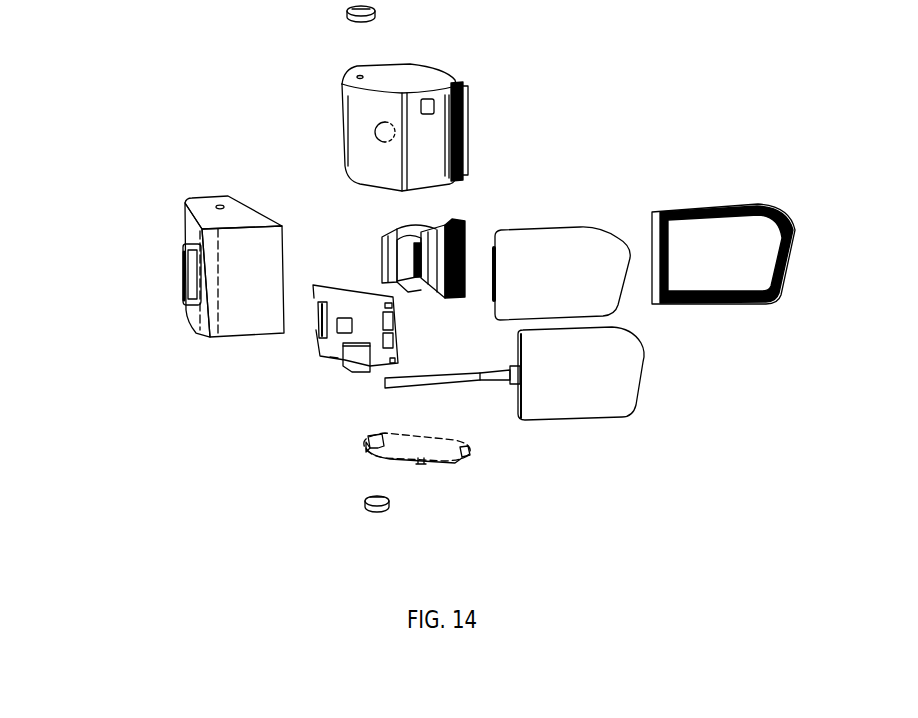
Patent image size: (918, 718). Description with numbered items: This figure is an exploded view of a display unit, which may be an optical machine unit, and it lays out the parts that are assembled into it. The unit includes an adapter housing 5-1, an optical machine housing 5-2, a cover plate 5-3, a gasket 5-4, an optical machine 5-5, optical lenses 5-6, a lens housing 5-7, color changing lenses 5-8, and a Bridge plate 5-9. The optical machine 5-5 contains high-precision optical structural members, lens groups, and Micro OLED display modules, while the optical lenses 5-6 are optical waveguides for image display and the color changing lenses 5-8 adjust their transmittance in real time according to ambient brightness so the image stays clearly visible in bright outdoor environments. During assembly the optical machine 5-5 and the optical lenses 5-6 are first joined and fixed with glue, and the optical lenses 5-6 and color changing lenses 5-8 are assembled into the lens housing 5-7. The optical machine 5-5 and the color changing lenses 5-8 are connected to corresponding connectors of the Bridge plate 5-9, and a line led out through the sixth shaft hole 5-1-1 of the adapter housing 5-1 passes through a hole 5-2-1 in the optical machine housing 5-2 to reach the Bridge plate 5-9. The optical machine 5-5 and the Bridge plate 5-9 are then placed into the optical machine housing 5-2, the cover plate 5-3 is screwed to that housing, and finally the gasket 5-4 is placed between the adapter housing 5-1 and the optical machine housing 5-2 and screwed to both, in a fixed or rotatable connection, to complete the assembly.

The adapter housing 5-1 is at (242, 280).
The sixth shaft hole 5-1-1 is at (186, 270).
The optical machine housing 5-2 is at (457, 105).
The hole 5-2-1 is at (375, 133).
The cover plate 5-3 is at (460, 465).
The gasket 5-4 is at (345, 13).
The optical machine 5-5 is at (455, 226).
The optical lenses 5-6 is at (582, 228).
The lens housing 5-7 is at (770, 211).
The color changing lenses 5-8 is at (621, 350).
The Bridge plate 5-9 is at (325, 338).